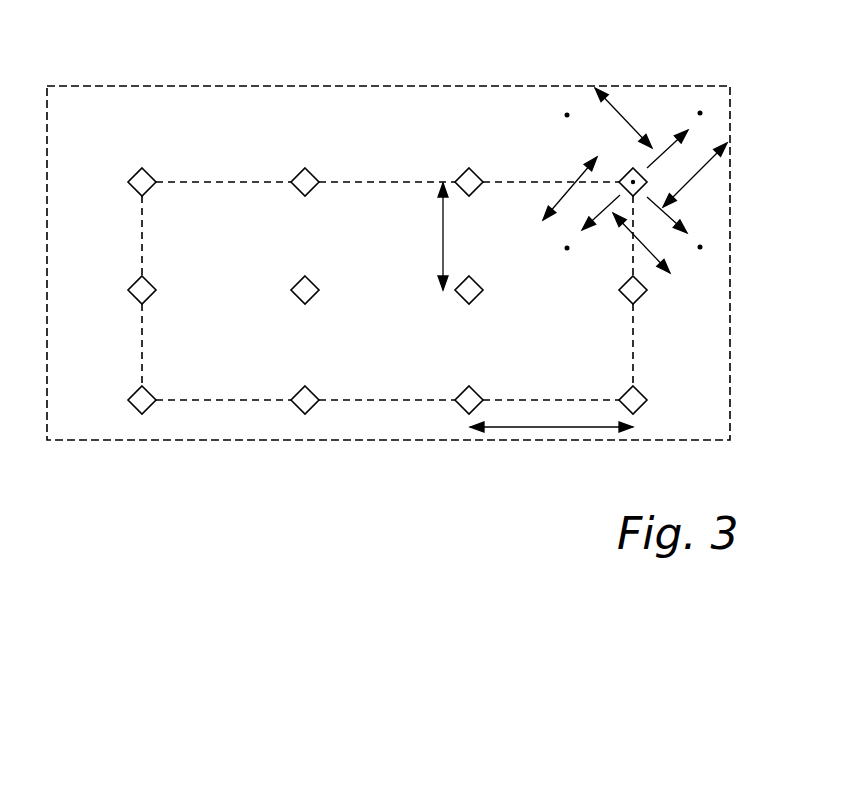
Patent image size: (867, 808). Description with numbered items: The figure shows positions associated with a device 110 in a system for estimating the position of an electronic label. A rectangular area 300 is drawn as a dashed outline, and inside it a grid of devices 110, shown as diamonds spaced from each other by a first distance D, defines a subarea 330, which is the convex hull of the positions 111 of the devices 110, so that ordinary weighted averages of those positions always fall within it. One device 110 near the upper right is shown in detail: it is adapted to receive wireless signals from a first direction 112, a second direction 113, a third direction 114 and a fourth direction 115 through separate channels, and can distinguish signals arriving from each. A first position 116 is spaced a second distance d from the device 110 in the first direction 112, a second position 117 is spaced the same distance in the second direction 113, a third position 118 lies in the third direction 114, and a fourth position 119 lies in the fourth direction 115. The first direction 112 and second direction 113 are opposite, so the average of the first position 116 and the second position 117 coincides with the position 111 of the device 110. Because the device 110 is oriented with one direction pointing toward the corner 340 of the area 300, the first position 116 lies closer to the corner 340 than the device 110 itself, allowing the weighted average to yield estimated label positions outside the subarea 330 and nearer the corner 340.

The area 300 is at (427, 236).
The subarea 330 is at (223, 217).
The corner 340 is at (733, 84).
The device 110 is at (633, 168).
The position 111 is at (630, 170).
The first direction 112 is at (657, 150).
The second direction 113 is at (690, 222).
The third direction 114 is at (620, 196).
The fourth direction 115 is at (592, 152).
The first position 116 is at (700, 112).
The second position 117 is at (700, 246).
The third position 118 is at (567, 248).
The fourth position 119 is at (567, 115).